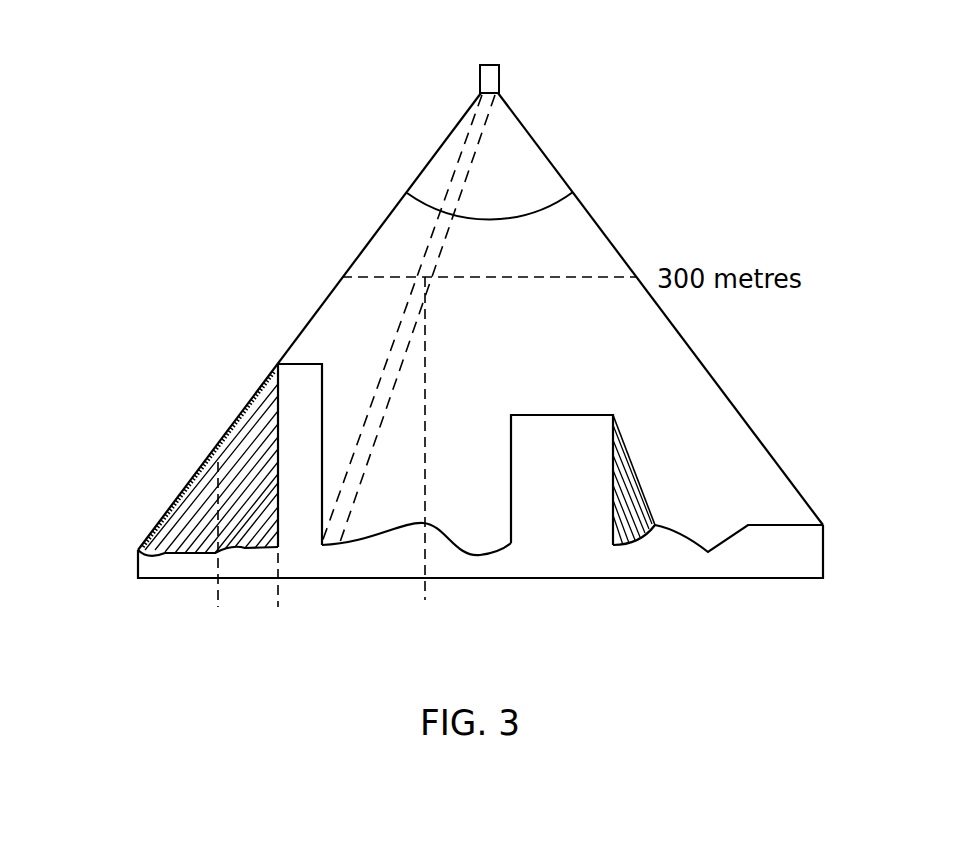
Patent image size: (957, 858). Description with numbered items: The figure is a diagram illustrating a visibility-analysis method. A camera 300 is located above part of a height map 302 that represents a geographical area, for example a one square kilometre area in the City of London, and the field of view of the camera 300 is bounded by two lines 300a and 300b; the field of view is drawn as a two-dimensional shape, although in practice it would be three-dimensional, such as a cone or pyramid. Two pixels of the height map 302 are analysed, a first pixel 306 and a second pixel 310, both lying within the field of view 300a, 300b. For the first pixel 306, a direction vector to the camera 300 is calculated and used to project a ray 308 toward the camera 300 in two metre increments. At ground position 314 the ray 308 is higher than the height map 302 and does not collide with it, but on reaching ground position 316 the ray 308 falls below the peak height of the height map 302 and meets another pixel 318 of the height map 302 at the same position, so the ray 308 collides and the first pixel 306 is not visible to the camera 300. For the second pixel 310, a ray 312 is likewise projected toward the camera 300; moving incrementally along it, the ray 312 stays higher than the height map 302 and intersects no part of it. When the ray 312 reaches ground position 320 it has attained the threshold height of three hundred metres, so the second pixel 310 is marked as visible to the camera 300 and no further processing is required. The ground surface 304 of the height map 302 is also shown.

The camera 300 is at (490, 65).
The field of view line 300a is at (310, 315).
The field of view line 300b is at (712, 378).
The height map 302 is at (792, 565).
The ground surface right 304 is at (790, 523).
The first pixel 306 is at (138, 555).
The ray 308 is at (180, 492).
The second pixel 310 is at (327, 547).
The ray 312 is at (400, 323).
The ground position 314 is at (212, 552).
The ground position 316 is at (276, 595).
The pixel 318 is at (268, 373).
The ground position 320 is at (424, 455).